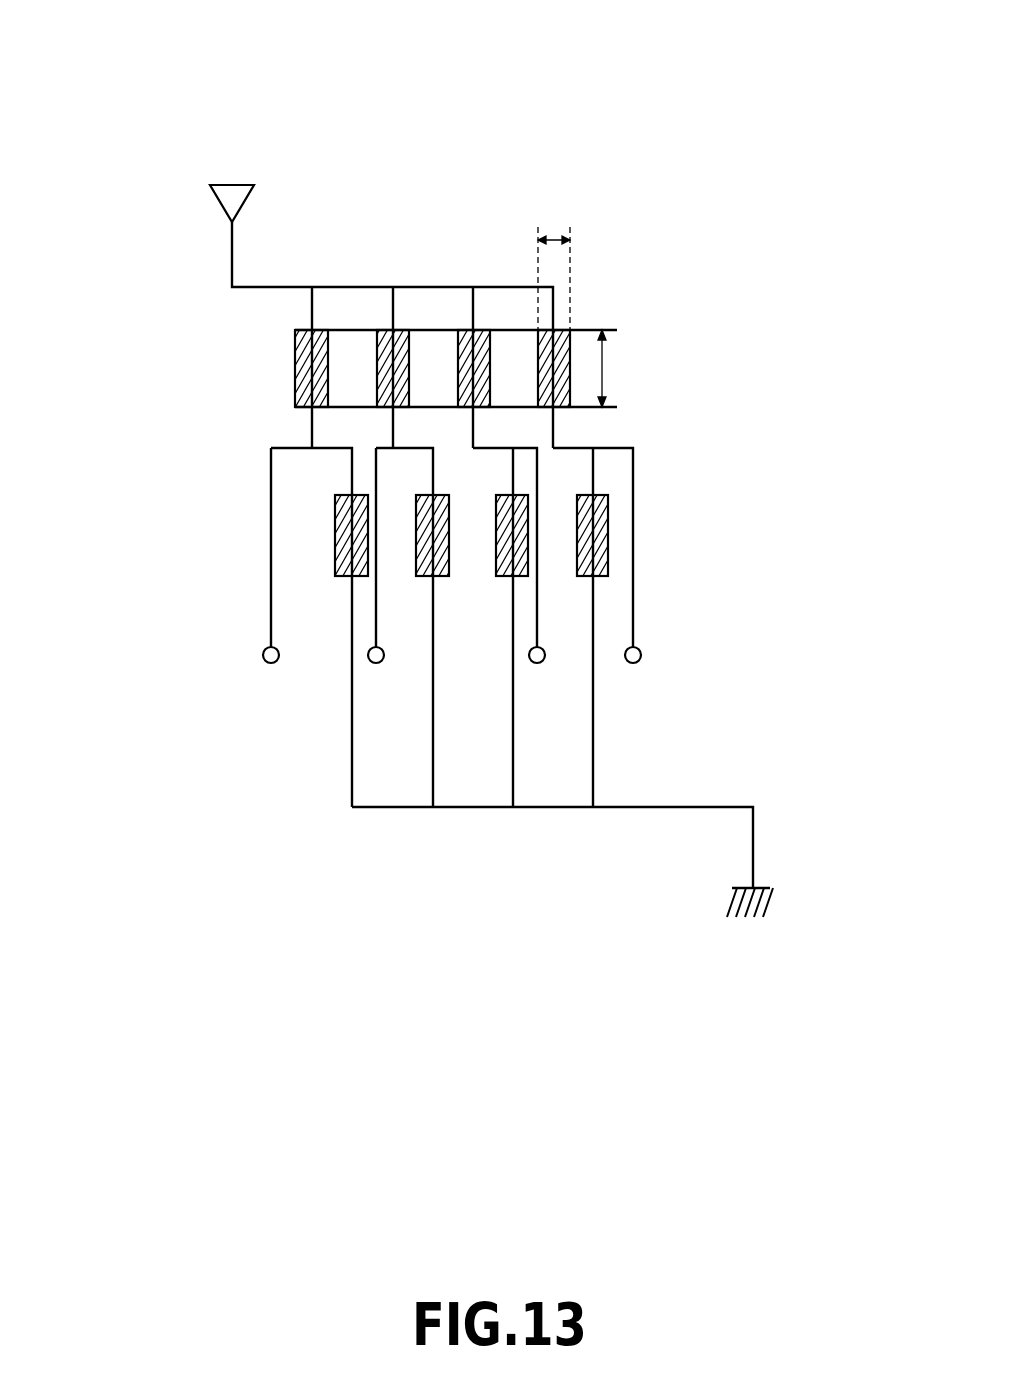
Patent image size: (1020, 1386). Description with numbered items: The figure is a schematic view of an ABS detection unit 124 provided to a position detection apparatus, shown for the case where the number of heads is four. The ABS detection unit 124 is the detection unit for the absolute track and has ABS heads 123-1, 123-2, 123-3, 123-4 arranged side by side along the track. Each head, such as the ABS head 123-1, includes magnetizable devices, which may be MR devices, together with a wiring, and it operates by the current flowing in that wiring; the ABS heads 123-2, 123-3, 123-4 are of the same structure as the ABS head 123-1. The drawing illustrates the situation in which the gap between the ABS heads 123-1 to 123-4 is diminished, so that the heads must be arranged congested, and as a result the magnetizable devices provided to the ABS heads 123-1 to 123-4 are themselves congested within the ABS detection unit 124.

The ABS detection unit 124 is at (400, 72).
The ABS head 123-1 is at (283, 447).
The ABS head 123-2 is at (418, 447).
The ABS head 123-3 is at (523, 447).
The ABS head 123-4 is at (575, 449).